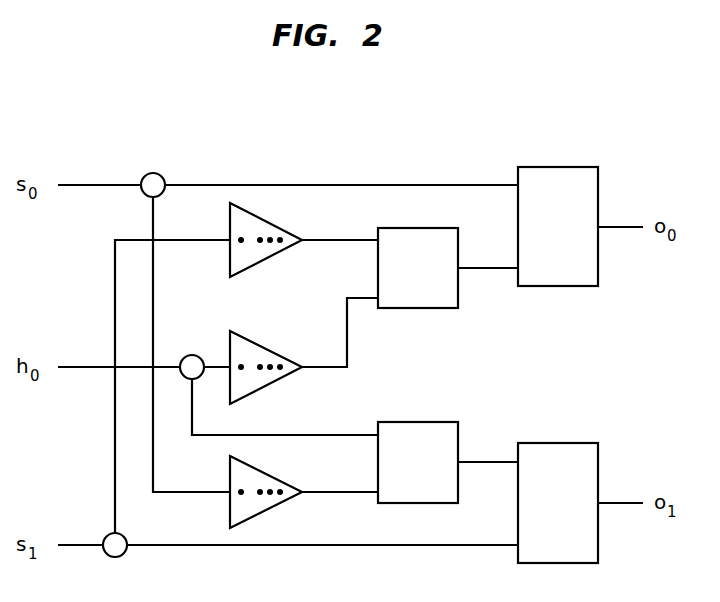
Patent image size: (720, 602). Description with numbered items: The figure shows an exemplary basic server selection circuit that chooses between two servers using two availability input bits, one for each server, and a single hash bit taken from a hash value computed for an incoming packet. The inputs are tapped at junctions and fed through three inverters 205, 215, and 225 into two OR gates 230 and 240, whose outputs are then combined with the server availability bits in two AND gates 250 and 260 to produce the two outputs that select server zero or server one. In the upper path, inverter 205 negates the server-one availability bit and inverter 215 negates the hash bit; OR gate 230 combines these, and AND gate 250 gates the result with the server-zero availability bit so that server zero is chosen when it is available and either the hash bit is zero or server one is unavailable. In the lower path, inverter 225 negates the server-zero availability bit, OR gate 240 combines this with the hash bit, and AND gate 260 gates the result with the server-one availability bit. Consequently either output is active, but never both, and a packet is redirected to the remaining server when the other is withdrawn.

The inverter 205 is at (282, 229).
The inverter 215 is at (282, 356).
The inverter 225 is at (282, 481).
The OR gate 230 is at (445, 228).
The OR gate 240 is at (445, 422).
The AND gate 250 is at (585, 167).
The AND gate 260 is at (585, 443).